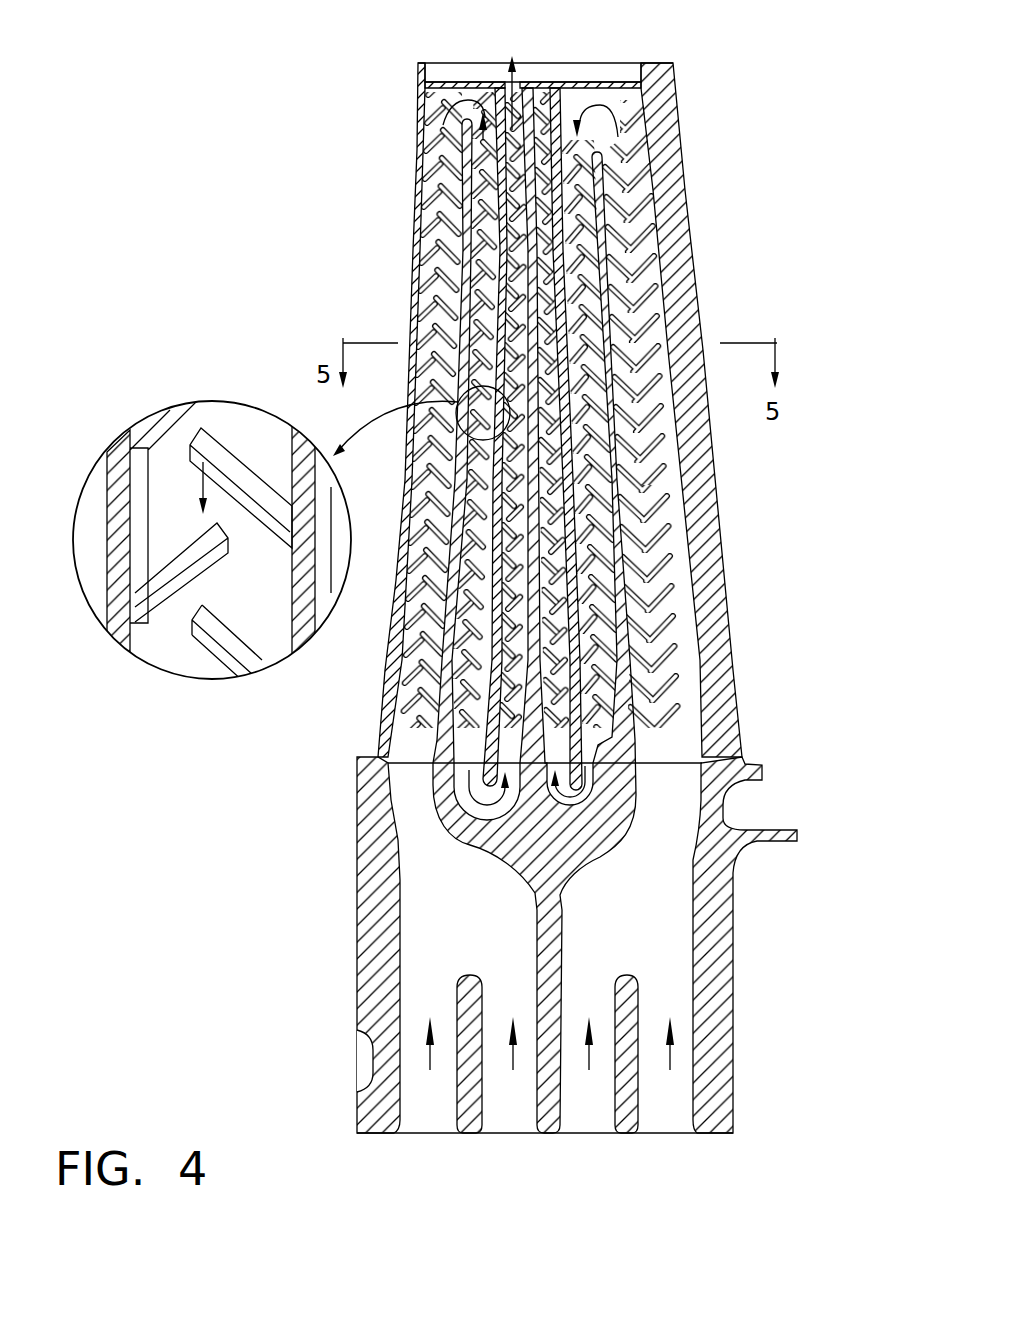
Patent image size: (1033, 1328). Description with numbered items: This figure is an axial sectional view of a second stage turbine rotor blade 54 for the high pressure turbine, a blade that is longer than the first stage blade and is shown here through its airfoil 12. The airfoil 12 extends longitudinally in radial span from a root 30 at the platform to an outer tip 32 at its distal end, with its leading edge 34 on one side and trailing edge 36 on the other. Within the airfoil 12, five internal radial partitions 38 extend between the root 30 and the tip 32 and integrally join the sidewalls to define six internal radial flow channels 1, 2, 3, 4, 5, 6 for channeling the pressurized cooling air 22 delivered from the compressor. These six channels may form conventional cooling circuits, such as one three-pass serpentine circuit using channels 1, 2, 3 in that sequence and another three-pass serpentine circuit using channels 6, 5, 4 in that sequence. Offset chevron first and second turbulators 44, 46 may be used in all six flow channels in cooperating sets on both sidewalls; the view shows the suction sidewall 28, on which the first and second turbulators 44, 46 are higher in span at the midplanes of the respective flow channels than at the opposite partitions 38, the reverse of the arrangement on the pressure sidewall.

The airfoil 12 is at (423, 580).
The air 22 is at (671, 1050).
The suction sidewall 28 is at (578, 106).
The root 30 is at (745, 762).
The tip 32 is at (628, 63).
The leading edge 34 is at (415, 162).
The trailing edge 36 is at (686, 164).
The radial partitions 38 is at (608, 232).
The first turbulators 44 is at (640, 517).
The second turbulators 46 is at (670, 474).
The turbine rotor blade 54 is at (448, 580).
The flow channel 1 is at (418, 757).
The flow channel 2 is at (477, 757).
The flow channel 3 is at (518, 757).
The flow channel 4 is at (565, 757).
The flow channel 5 is at (607, 757).
The flow channel 6 is at (449, 429).